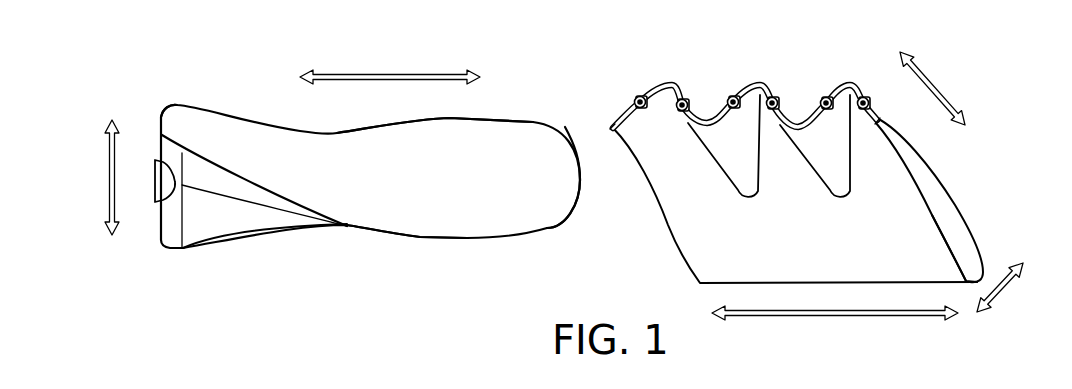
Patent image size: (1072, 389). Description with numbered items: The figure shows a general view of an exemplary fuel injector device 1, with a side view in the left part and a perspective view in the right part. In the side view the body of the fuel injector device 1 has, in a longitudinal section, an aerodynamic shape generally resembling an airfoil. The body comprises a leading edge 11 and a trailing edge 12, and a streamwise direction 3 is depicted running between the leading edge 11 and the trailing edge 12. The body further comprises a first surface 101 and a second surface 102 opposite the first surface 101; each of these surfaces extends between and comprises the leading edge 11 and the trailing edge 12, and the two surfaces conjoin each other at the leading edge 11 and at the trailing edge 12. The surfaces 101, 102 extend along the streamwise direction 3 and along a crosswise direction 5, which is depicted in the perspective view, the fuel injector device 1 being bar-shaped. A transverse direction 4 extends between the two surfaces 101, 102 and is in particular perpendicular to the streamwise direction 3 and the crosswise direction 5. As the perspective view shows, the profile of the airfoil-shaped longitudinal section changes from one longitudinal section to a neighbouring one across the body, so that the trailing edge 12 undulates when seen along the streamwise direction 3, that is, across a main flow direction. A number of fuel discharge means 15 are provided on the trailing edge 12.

The fuel injector device 1 is at (497, 243).
The streamwise direction 3 is at (632, 86).
The transverse direction 4 is at (555, 216).
The crosswise direction 5 is at (835, 325).
The leading edge 11 is at (581, 183).
The trailing edge 12 is at (161, 117).
The fuel discharge means 15 is at (155, 180).
The first surface 101 is at (483, 118).
The second surface 102 is at (469, 240).